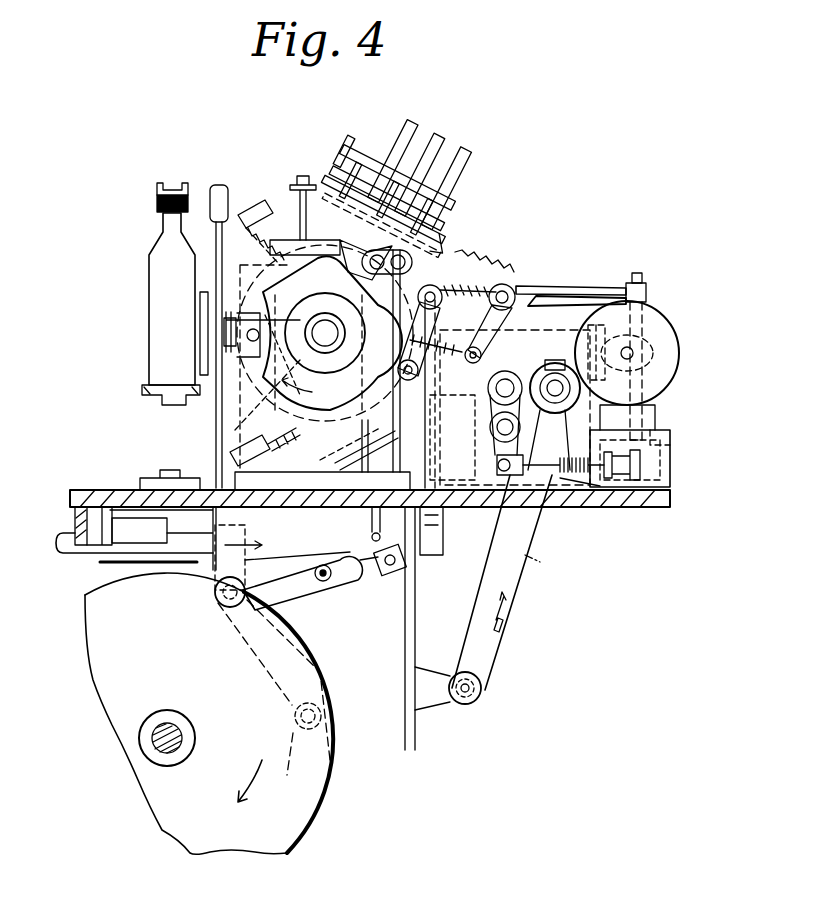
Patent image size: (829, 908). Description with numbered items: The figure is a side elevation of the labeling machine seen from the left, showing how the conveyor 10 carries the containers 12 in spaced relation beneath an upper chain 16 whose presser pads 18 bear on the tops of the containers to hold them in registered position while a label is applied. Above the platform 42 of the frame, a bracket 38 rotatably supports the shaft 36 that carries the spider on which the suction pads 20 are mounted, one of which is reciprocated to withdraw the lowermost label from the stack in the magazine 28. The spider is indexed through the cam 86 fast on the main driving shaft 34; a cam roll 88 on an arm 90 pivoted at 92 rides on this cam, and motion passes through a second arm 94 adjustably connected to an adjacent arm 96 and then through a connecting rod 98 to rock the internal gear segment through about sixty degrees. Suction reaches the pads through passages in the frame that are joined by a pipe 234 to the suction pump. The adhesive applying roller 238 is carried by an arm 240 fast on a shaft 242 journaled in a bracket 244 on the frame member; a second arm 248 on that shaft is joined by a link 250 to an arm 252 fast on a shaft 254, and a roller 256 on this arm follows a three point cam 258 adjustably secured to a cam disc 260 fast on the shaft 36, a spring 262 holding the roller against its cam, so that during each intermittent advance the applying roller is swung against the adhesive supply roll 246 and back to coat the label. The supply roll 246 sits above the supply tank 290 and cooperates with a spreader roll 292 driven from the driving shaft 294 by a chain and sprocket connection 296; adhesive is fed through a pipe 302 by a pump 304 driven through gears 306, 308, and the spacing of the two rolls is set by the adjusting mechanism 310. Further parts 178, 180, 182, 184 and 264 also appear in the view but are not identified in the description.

The conveyor 10 is at (143, 392).
The container 12 is at (150, 272).
The upper chain 16 is at (158, 186).
The presser pad 18 is at (158, 204).
The suction pad 20 is at (191, 350).
The magazine 28 is at (394, 133).
The main driving shaft 34 is at (152, 712).
The shaft 36 is at (224, 330).
The bracket 38 is at (287, 200).
The platform 42 is at (80, 492).
The cam 86 is at (316, 800).
The cam roll 88 is at (294, 730).
The arm 90 is at (252, 663).
The pivot 92 is at (218, 612).
The second arm 94 is at (295, 588).
The adjacent arm 96 is at (358, 560).
The connecting rod 98 is at (443, 527).
The connecting rod 178 is at (440, 545).
The cylinder 180 is at (116, 542).
The slide 182 is at (246, 538).
The rod 184 is at (178, 545).
The pipe 234 is at (216, 455).
The adhesive applying roller 238 is at (472, 421).
The arm 240 is at (490, 362).
The shaft 242 is at (530, 292).
The bracket 244 is at (500, 290).
The adhesive supply roll 246 is at (454, 437).
The second arm 248 is at (490, 340).
The link 250 is at (455, 275).
The arm 252 is at (445, 265).
The shaft 254 is at (432, 285).
The roller 256 is at (372, 425).
The three point cam 258 is at (226, 320).
The cam disc 260 is at (325, 330).
The spring 262 is at (480, 290).
The spring 264 is at (439, 358).
The supply tank 290 is at (667, 466).
The spreader roll 292 is at (520, 475).
The driving shaft 294 is at (482, 689).
The chain and sprocket connection 296 is at (522, 557).
The pipe 302 is at (633, 282).
The pump 304 is at (665, 318).
The gear 306 is at (655, 408).
The gear 308 is at (680, 348).
The adjusting mechanism 310 is at (585, 490).